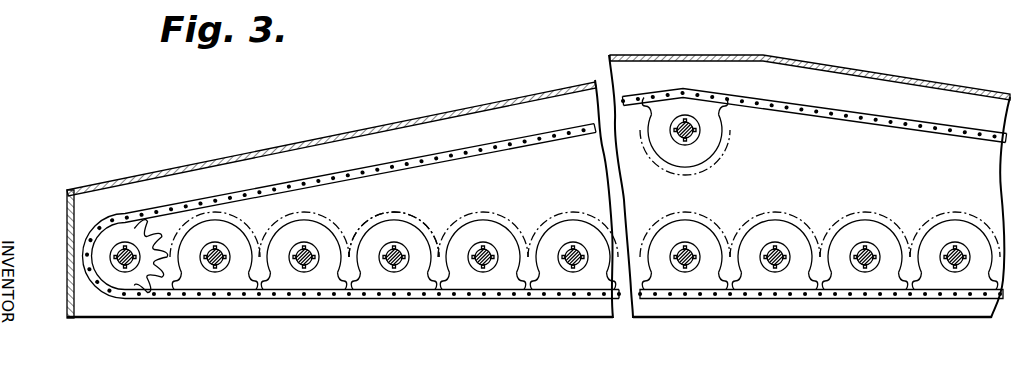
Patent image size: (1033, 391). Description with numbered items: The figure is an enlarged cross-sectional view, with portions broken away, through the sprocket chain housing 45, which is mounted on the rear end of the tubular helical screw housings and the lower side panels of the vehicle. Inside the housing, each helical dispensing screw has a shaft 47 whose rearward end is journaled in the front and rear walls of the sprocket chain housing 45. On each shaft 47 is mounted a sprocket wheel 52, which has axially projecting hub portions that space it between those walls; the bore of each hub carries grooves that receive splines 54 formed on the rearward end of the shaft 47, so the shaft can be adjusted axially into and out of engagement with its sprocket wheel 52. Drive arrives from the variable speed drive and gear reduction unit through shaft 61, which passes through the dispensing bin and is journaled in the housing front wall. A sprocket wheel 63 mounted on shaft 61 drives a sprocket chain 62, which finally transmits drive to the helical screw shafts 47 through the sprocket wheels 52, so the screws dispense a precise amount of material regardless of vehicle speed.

The sprocket chain housing 45 is at (363, 126).
The sprocket chain 62 is at (490, 144).
The shaft 47 is at (311, 245).
The sprocket wheel 52 is at (394, 221).
The splines 54 is at (496, 229).
The shaft 61 is at (716, 130).
The sprocket wheel 63 is at (689, 119).